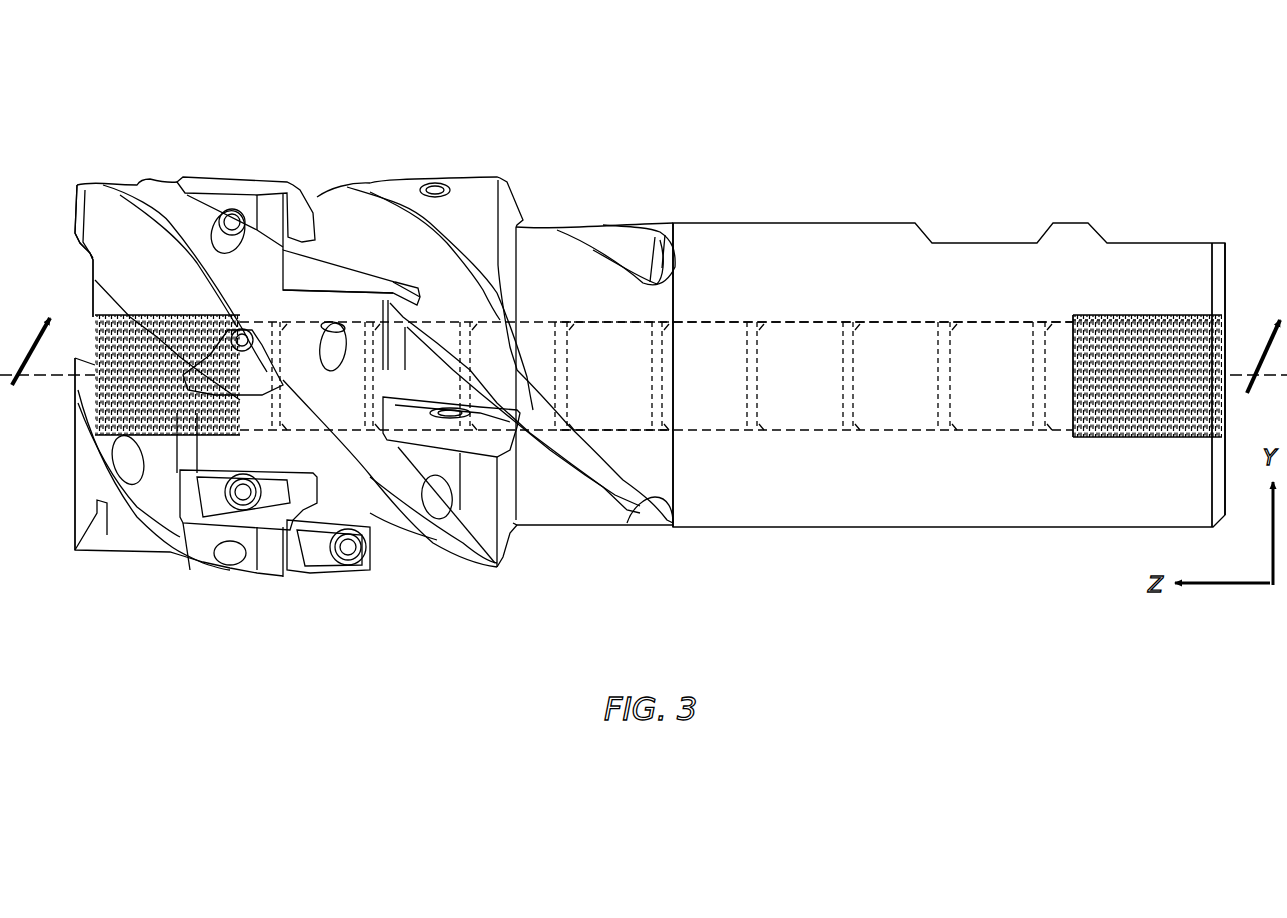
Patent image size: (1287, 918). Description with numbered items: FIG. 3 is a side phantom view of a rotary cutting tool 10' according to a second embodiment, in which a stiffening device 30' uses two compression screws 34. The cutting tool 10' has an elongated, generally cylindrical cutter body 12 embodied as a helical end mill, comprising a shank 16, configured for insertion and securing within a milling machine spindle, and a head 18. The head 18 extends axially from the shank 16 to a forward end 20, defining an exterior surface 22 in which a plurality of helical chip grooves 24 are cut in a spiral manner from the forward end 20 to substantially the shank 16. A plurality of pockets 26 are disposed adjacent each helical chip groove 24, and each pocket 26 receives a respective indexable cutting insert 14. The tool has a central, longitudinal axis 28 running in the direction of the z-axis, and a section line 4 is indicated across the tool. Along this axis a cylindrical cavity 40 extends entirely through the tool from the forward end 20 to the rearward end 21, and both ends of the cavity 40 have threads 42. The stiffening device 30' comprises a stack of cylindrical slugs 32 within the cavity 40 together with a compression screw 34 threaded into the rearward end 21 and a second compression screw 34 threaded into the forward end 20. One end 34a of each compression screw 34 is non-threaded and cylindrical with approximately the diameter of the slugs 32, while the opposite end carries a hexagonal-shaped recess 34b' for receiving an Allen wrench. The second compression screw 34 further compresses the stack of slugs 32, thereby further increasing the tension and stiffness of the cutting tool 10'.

The cutting tool 10' is at (1155, 277).
The cutter body 12 is at (708, 152).
The cutting insert 14 is at (213, 190).
The shank 16 is at (836, 216).
The head 18 is at (448, 120).
The forward end 20 is at (76, 297).
The rearward end 21 is at (1232, 297).
The exterior surface 22 is at (472, 205).
The helical chip groove 24 is at (113, 243).
The pocket 26 is at (208, 462).
The central longitudinal axis 28 is at (45, 380).
The stiffening device 30' is at (873, 249).
The cylindrical slug 32 is at (628, 345).
The compression screw 34 is at (1165, 318).
The non-threaded end of compression screw 34a is at (1060, 328).
The hexagonal-shaped recess 34b' is at (243, 478).
The cavity 40 is at (895, 330).
The threads 42 is at (1125, 318).
The section line 4- 4 is at (643, 370).